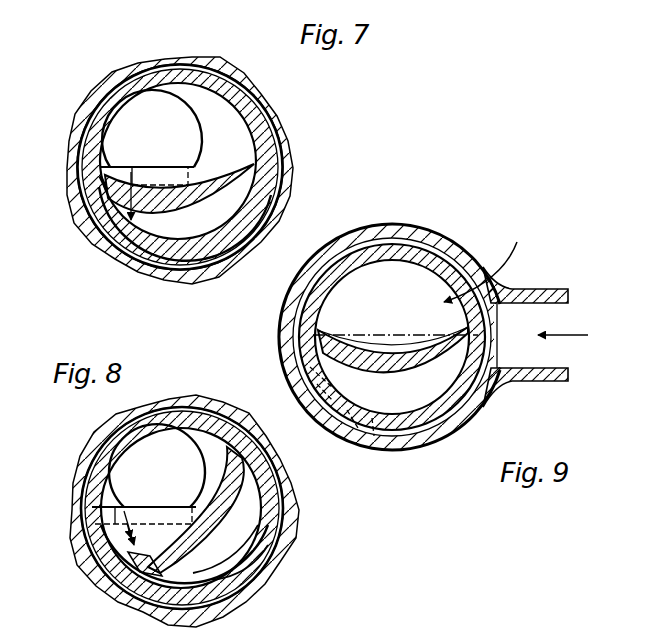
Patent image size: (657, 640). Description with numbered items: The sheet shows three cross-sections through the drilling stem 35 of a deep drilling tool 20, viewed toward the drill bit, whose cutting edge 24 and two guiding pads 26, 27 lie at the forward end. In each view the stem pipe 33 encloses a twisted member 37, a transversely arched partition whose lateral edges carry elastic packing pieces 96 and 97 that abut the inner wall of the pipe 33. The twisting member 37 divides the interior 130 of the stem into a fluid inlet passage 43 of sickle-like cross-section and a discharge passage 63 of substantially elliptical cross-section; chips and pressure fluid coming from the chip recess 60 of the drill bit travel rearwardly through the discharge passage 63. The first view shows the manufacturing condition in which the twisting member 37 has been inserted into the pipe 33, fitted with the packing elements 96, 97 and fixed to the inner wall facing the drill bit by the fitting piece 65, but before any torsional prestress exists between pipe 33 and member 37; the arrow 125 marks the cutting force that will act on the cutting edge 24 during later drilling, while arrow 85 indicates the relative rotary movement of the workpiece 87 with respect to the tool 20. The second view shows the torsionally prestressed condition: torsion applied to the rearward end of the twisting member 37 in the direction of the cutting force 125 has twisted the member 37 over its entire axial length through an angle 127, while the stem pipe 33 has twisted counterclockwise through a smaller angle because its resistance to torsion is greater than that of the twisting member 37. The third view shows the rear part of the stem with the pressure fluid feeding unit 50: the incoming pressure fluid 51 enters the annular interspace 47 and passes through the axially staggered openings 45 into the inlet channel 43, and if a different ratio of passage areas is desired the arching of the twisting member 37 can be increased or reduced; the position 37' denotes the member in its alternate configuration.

In FIG. 7, the deep drilling tool 20 is at (78, 78).
In FIG. 7, the cutting edge 24 is at (72, 150).
In FIG. 8, the cutting edge 24 is at (117, 506).
In FIG. 7, the guiding pad 26 is at (187, 270).
In FIG. 7, the guiding pad 27 is at (284, 167).
In FIG. 7, the stem pipe 33 is at (221, 86).
In FIG. 8, the stem pipe 33 is at (182, 419).
In FIG. 9, the stem pipe 33 is at (366, 256).
In FIG. 7, the drilling stem 35 is at (227, 256).
In FIG. 8, the drilling stem 35 is at (184, 554).
In FIG. 7, the twisted member 37 is at (179, 178).
In FIG. 8, the twisted member 37 is at (208, 542).
In FIG. 9, the twisted member 37 is at (393, 369).
In FIG. 9, the vane in alternate position 37' is at (395, 319).
In FIG. 7, the fluid inlet passage 43 is at (235, 207).
In FIG. 9, the fluid inlet passage 43 is at (403, 399).
In FIG. 9, the inlet openings 45 is at (297, 381).
In FIG. 9, the annular space 47 is at (414, 240).
In FIG. 9, the fluid inlet unit 50 is at (470, 236).
In FIG. 9, the incoming pressure fluid 51 is at (552, 334).
In FIG. 7, the chip mouth or recess 60 is at (182, 107).
In FIG. 7, the discharge passage 63 is at (228, 133).
In FIG. 9, the discharge passage 63 is at (425, 288).
In FIG. 7, the fitting piece 65 is at (194, 237).
In FIG. 7, the arrow 85 is at (98, 68).
In FIG. 7, the workpiece 87 is at (273, 210).
In FIG. 8, the workpiece 87 is at (263, 577).
In FIG. 7, the elastic packing piece 96 is at (263, 150).
In FIG. 7, the elastic packing piece 97 is at (78, 208).
In FIG. 7, the cutting force arrow 125 is at (143, 150).
In FIG. 8, the twisting angle 127 is at (138, 512).
In FIG. 9, the interior of the drill stem 130 is at (499, 265).